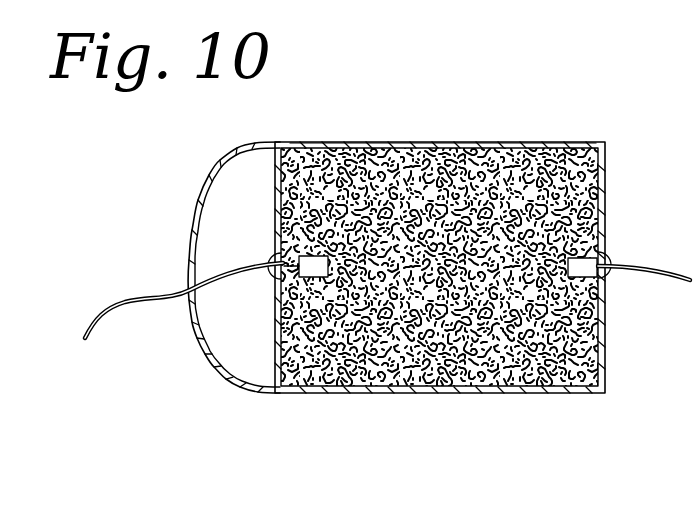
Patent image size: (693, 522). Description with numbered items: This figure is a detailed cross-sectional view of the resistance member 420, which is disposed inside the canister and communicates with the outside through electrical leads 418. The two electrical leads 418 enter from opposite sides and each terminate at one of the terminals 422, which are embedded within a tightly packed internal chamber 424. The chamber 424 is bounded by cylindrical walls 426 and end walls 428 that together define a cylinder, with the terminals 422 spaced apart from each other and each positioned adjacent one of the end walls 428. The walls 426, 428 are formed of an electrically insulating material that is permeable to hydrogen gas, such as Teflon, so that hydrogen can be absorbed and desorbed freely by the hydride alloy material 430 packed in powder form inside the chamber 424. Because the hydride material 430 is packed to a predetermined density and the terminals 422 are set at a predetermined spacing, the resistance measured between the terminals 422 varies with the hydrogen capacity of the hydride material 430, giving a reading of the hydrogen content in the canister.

The electrical leads 418 is at (151, 298).
The resistance member 420 is at (389, 259).
The terminals 422 is at (298, 279).
The internal chamber 424 is at (362, 356).
The cylindrical walls 426 is at (412, 143).
The end walls 428 is at (224, 180).
The hydride alloy material 430 is at (508, 143).